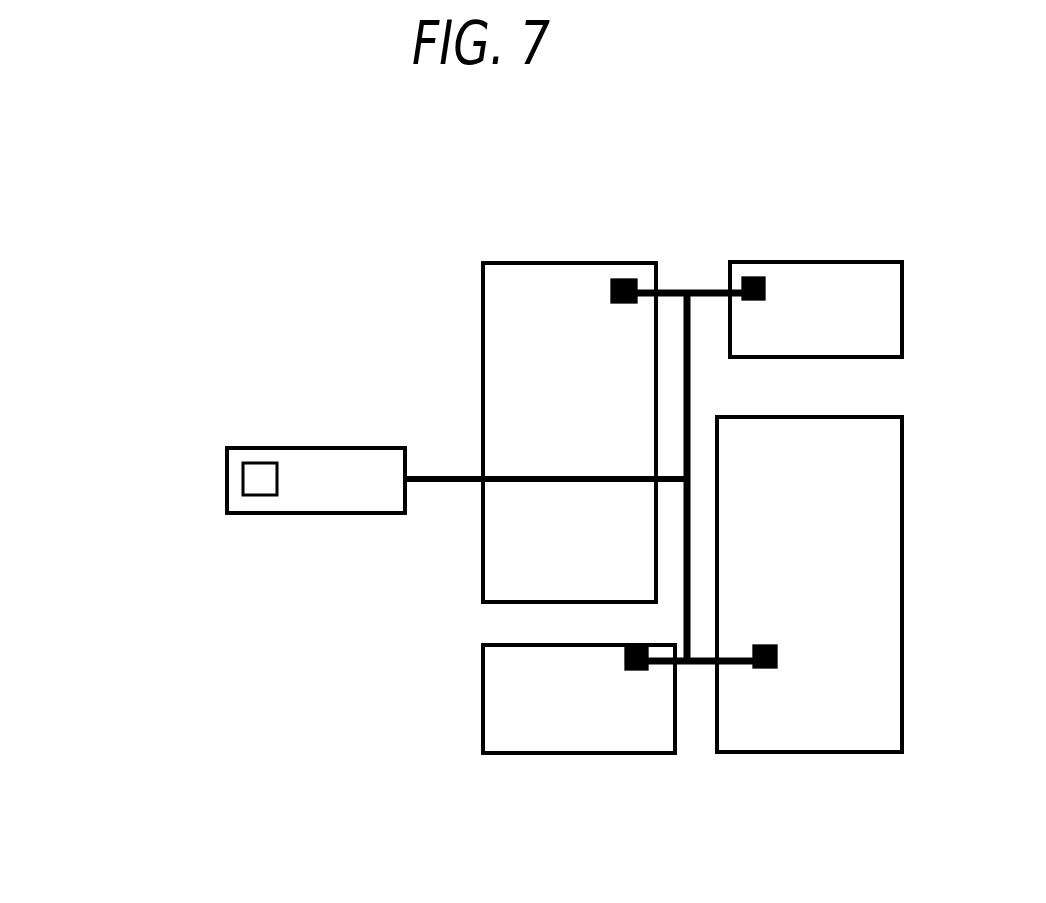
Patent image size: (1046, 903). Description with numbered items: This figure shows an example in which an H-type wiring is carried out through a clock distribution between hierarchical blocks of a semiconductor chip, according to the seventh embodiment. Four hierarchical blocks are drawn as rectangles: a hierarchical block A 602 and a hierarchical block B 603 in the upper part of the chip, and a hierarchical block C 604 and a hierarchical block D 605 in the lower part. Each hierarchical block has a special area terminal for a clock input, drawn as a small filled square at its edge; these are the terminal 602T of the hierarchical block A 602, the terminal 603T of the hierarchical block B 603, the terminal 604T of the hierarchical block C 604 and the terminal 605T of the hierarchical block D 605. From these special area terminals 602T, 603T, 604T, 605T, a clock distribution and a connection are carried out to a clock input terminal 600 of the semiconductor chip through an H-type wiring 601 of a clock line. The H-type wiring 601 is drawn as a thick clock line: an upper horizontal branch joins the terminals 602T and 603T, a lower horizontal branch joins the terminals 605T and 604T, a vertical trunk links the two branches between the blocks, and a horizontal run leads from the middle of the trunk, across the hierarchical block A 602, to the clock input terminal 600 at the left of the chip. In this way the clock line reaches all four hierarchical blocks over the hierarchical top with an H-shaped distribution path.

The clock input terminal 600 is at (257, 448).
The H-type wiring 601 is at (453, 477).
The hierarchical block A 602 is at (487, 262).
The hierarchical block B 603 is at (868, 262).
The hierarchical block C 604 is at (852, 752).
The hierarchical block D 605 is at (580, 753).
The terminal of first apparatus 602T is at (620, 305).
The terminal of second apparatus 603T is at (750, 302).
The terminal of third apparatus 604T is at (765, 670).
The terminal of fourth apparatus 605T is at (630, 672).